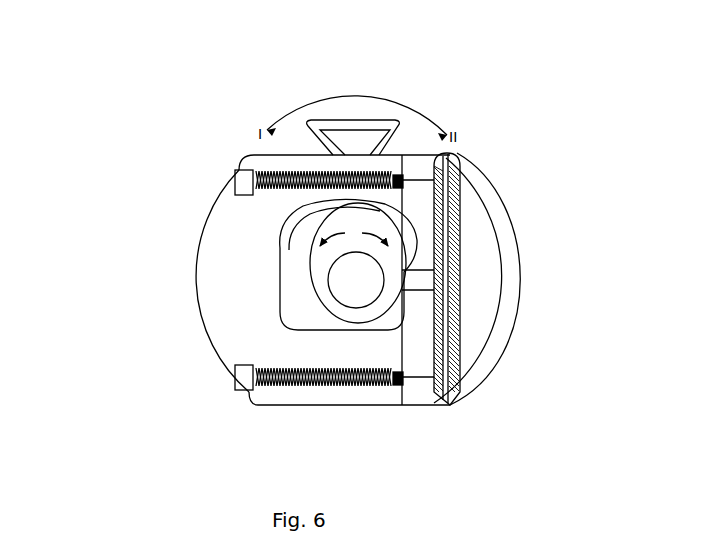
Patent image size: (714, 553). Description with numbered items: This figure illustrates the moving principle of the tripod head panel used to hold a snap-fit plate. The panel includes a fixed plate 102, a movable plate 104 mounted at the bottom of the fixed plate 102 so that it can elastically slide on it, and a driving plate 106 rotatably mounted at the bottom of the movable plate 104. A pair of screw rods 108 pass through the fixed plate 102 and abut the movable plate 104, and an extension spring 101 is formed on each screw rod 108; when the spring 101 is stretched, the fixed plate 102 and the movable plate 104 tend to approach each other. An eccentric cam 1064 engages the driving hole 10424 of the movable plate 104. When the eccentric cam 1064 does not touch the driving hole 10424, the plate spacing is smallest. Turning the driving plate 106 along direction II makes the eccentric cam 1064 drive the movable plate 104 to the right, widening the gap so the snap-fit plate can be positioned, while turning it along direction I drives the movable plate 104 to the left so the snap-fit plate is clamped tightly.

The extension spring 101 is at (300, 388).
The fixed plate 102 is at (233, 233).
The movable plate 104 is at (494, 197).
The driving plate 106 is at (365, 127).
The screw rod 108 is at (248, 373).
The eccentric cam 1064 is at (390, 266).
The driving hole 10424 is at (303, 288).